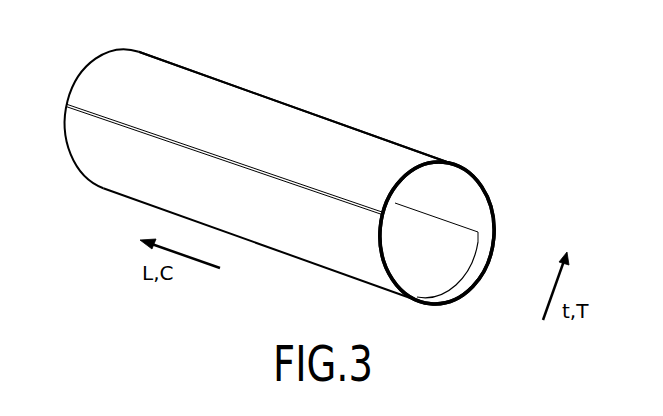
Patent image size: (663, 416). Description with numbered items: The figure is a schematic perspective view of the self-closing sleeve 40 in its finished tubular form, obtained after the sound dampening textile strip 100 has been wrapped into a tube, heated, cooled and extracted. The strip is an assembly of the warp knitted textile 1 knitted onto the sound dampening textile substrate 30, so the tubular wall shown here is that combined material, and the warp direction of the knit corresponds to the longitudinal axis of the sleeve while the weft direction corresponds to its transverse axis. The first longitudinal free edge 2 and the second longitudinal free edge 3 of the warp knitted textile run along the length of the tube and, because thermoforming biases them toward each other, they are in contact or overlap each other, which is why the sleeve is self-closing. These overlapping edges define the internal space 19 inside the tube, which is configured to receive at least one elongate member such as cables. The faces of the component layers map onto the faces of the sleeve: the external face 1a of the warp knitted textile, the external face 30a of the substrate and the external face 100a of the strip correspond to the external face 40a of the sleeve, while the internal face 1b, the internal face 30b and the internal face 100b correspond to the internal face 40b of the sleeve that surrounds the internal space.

The warp knitted textile 1 is at (282, 155).
The sound dampening textile substrate 30 is at (282, 155).
The self-closing sleeve 40 is at (282, 155).
The sound dampening textile strip 100 is at (201, 66).
The external face of the warp knitted textile 1a is at (297, 108).
The external face of the sound dampening substrate 30a is at (297, 108).
The external face of the self-closing sleeve 40a is at (297, 108).
The external face of the textile strip 100a is at (296, 146).
The internal face of the warp knitted textile 1b is at (489, 206).
The internal face of the sound dampening substrate 30b is at (489, 206).
The internal face of the self-closing sleeve 40b is at (489, 206).
The internal face of the textile strip 100b is at (450, 191).
The first longitudinal free edge 2 is at (301, 182).
The second longitudinal free edge 3 is at (454, 222).
The internal space 19 is at (439, 245).